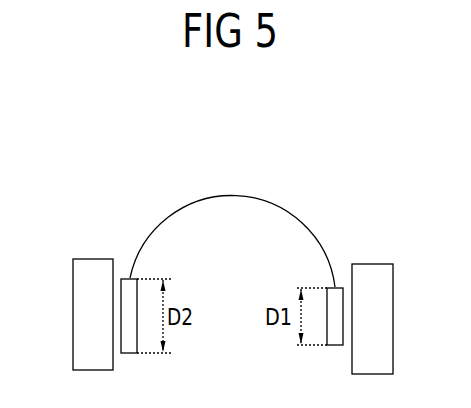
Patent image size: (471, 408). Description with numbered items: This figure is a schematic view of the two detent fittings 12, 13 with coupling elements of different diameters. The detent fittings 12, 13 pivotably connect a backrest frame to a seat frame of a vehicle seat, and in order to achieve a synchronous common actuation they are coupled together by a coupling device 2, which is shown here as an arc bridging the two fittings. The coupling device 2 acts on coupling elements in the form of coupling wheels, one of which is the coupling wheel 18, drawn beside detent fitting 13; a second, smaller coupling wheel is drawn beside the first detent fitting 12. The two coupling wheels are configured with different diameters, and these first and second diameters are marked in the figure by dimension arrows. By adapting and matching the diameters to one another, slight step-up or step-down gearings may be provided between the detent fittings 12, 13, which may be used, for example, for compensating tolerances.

The coupling device 2 is at (237, 182).
The first detent fitting 12 is at (375, 241).
The detent fitting 13 is at (78, 239).
The coupling wheel 18 is at (128, 290).